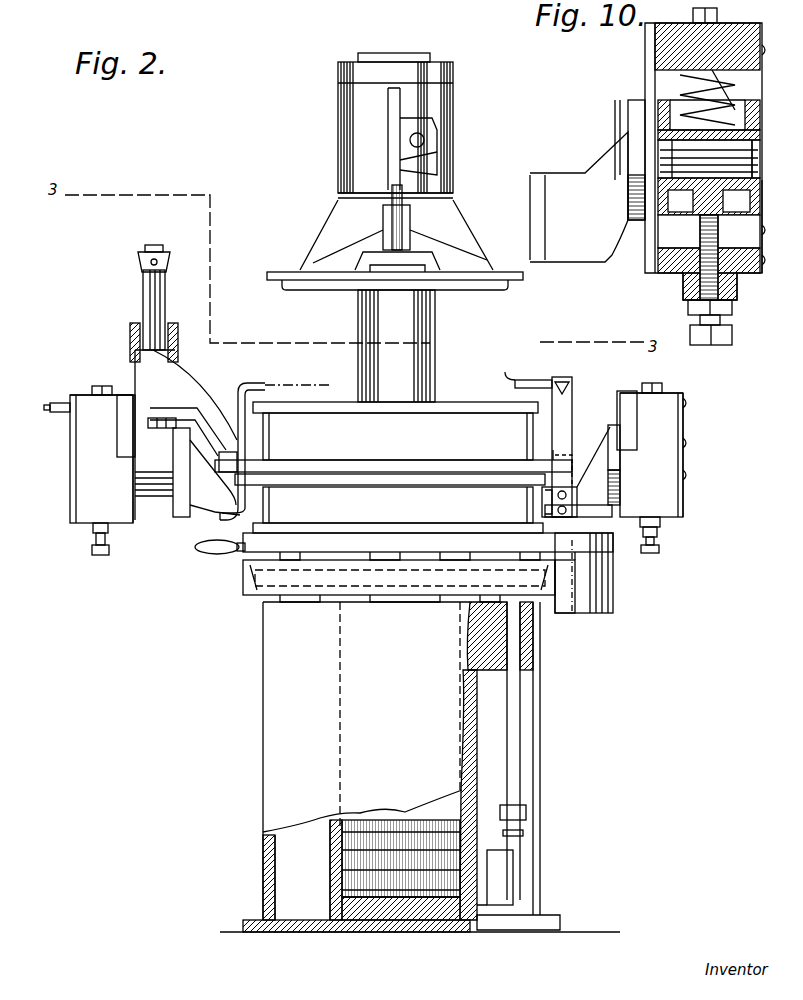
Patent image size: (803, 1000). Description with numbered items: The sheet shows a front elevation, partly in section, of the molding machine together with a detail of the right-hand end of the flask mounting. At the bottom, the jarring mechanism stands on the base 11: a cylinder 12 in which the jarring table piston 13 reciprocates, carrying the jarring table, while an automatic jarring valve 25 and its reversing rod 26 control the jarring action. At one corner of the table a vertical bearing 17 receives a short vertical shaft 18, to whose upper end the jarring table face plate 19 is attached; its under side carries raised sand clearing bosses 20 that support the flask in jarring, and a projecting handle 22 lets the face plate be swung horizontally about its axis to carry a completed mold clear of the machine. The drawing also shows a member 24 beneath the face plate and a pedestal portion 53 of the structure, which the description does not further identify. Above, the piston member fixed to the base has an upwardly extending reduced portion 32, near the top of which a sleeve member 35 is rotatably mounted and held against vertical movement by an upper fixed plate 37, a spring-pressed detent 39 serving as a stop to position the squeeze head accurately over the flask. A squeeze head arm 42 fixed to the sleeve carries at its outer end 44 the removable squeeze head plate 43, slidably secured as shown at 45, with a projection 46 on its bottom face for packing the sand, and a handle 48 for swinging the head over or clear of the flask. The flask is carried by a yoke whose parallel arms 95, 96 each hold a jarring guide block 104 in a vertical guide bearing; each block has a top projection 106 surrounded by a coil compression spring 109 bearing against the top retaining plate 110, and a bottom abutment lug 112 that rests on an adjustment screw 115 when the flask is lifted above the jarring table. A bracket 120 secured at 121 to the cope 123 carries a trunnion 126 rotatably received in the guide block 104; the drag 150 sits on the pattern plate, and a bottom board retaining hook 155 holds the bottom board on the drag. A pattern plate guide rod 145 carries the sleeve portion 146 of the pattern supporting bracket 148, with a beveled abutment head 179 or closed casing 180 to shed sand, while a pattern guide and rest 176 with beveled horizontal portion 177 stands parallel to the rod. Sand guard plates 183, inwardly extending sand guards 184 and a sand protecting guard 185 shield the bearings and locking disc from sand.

In FIG. 2, the base 11 is at (253, 934).
In FIG. 2, the cylinder 12 is at (330, 868).
In FIG. 2, the jarring table piston 13 is at (392, 811).
In FIG. 2, the vertical bearing 17 is at (613, 603).
In FIG. 2, the short vertical shaft 18 is at (575, 616).
In FIG. 2, the jarring table face plate 19 is at (598, 545).
In FIG. 2, the sand clearing bosses 20 is at (335, 552).
In FIG. 2, the projecting handle 22 is at (210, 556).
In FIG. 2, the table 24 is at (247, 581).
In FIG. 2, the automatic jarring valve 25 is at (505, 882).
In FIG. 2, the reversing rod 26 is at (521, 760).
In FIG. 2, the upwardly extending reduced portion 32 is at (434, 345).
In FIG. 2, the sleeve member 35 is at (453, 112).
In FIG. 2, the upper fixed plate 37 is at (452, 67).
In FIG. 2, the spring-pressed detent 39 is at (424, 143).
In FIG. 2, the squeeze head arm 42 is at (326, 216).
In FIG. 2, the squeeze head plate 43 is at (512, 284).
In FIG. 2, the outer end of the squeeze head arm 44 is at (318, 268).
In FIG. 2, the slidable securing 45 is at (385, 285).
In FIG. 2, the projection 46 is at (308, 291).
In FIG. 2, the handle 48 is at (398, 232).
In FIG. 2, the pedestal 53 is at (268, 705).
In FIG. 2, the yoke arm 95 is at (70, 510).
In FIG. 2, the yoke arm 96 is at (672, 489).
In FIG. 10, the jarring guide block 104 is at (684, 225).
In FIG. 10, the projection 106 is at (709, 159).
In FIG. 10, the coil compression spring 109 is at (690, 80).
In FIG. 2, the top retaining plate 110 is at (72, 398).
In FIG. 10, the top retaining plate 110 is at (665, 37).
In FIG. 10, the abutment lug 112 is at (705, 222).
In FIG. 2, the adjustment screw 115 is at (98, 556).
In FIG. 10, the adjustment screw 115 is at (722, 290).
In FIG. 2, the bracket 120 is at (600, 448).
In FIG. 10, the bracket 120 is at (610, 160).
In FIG. 2, the securing point 121 is at (541, 505).
In FIG. 2, the cope 123 is at (398, 510).
In FIG. 10, the trunnion 126 is at (746, 152).
In FIG. 2, the pattern plate guide rod 145 is at (146, 308).
In FIG. 2, the sleeve portion 146 is at (142, 380).
In FIG. 2, the pattern supporting bracket 148 is at (190, 397).
In FIG. 2, the drag 150 is at (395, 431).
In FIG. 2, the bottom board retaining hook 155 is at (258, 384).
In FIG. 2, the pattern guide and rest 176 is at (573, 405).
In FIG. 2, the horizontal portion 177 is at (561, 383).
In FIG. 2, the pattern bracket sleeve abutment head 179 is at (140, 262).
In FIG. 2, the closed casing 180 is at (132, 345).
In FIG. 2, the sand guard plate 183 is at (700, 432).
In FIG. 10, the sand guard plate 183 is at (762, 233).
In FIG. 2, the sand guard 184 is at (118, 435).
In FIG. 10, the sand guard 184 is at (656, 23).
In FIG. 2, the sand protecting guard 185 is at (178, 518).